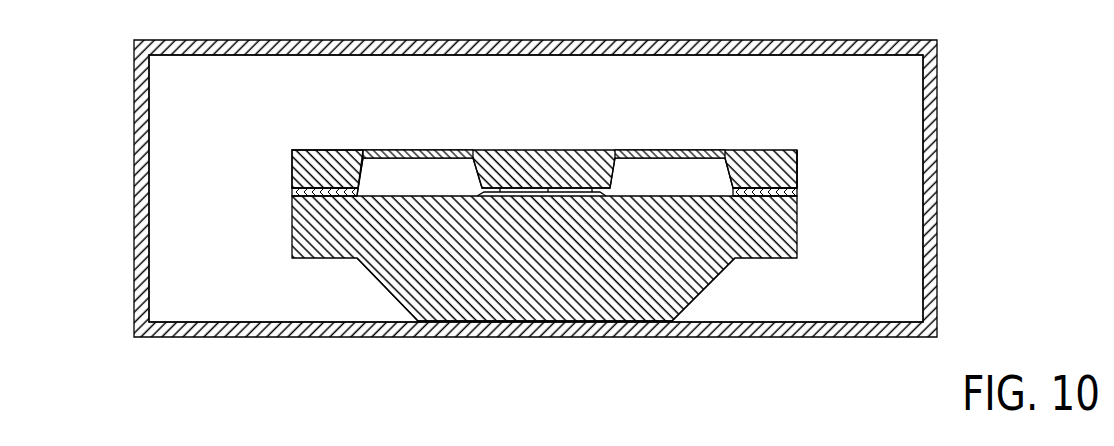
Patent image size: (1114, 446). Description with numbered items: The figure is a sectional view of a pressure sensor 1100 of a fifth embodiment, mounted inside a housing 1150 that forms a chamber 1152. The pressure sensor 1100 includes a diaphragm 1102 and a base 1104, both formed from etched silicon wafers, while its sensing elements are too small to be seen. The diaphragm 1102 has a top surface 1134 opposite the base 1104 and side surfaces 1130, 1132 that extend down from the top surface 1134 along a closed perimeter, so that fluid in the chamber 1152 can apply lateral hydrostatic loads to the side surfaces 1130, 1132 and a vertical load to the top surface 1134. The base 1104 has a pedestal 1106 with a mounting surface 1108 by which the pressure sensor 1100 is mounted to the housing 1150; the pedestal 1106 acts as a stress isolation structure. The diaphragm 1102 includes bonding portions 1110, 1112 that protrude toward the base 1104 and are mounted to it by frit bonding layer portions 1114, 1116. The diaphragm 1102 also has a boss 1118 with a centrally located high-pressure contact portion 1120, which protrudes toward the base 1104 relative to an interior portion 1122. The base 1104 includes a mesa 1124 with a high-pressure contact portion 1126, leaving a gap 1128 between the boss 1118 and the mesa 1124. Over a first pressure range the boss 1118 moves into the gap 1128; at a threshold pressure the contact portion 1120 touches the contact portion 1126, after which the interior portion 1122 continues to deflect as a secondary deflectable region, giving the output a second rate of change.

The pressure sensor 1100 is at (828, 135).
The diaphragm 1102 is at (292, 178).
The base 1104 is at (292, 225).
The pedestal 1106 is at (382, 284).
The mounting surface 1108 is at (443, 326).
The bonding portion 1110 is at (327, 183).
The bonding portion 1112 is at (758, 150).
The bonding layer portion 1114 is at (292, 192).
The bonding layer portion 1116 is at (797, 195).
The boss 1118 is at (485, 180).
The high-pressure contact portion 1120 is at (548, 188).
The interior portion 1122 is at (400, 150).
The mesa 1124 is at (489, 192).
The high-pressure contact portion 1126 is at (512, 190).
The gap 1128 is at (592, 188).
The side surface 1130 is at (292, 155).
The side surface 1132 is at (797, 172).
The top surface 1134 is at (655, 152).
The housing 1150 is at (138, 330).
The chamber 1152 is at (157, 278).